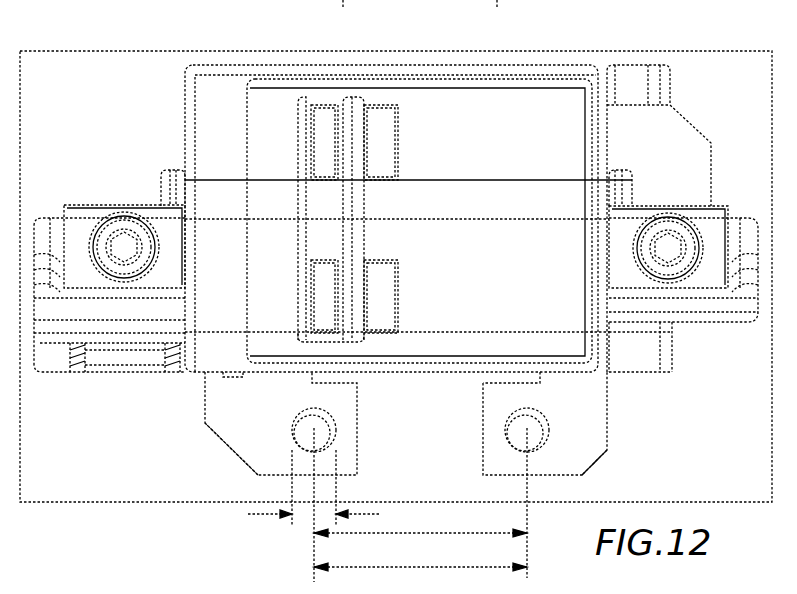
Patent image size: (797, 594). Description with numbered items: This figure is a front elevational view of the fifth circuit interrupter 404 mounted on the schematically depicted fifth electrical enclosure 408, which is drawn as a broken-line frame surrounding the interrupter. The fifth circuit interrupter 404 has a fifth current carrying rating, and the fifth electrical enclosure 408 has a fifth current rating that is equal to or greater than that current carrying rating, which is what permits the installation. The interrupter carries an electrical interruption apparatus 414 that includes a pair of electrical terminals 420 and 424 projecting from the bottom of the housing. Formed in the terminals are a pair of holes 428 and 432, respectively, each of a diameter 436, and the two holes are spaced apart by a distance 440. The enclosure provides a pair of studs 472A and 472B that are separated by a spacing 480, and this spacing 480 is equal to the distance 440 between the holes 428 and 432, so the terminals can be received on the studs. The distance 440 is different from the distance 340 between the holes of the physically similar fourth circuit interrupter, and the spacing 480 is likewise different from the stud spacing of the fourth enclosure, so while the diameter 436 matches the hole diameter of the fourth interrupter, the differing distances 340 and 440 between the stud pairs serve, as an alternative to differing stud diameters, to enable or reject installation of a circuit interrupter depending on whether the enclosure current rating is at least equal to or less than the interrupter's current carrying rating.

The distance 340 is at (428, 0).
The fifth circuit interrupter 404 is at (536, 52).
The fifth electrical enclosure 408 is at (655, 46).
The electrical interruption apparatus 414 is at (612, 458).
The electrical terminal 420 is at (205, 383).
The electrical terminal 424 is at (607, 422).
The hole 428 is at (295, 413).
The hole 432 is at (515, 405).
The diameter 436 is at (304, 516).
The distance 440 is at (442, 535).
The stud 472A is at (295, 448).
The stud 472B is at (540, 450).
The spacing 480 is at (455, 569).